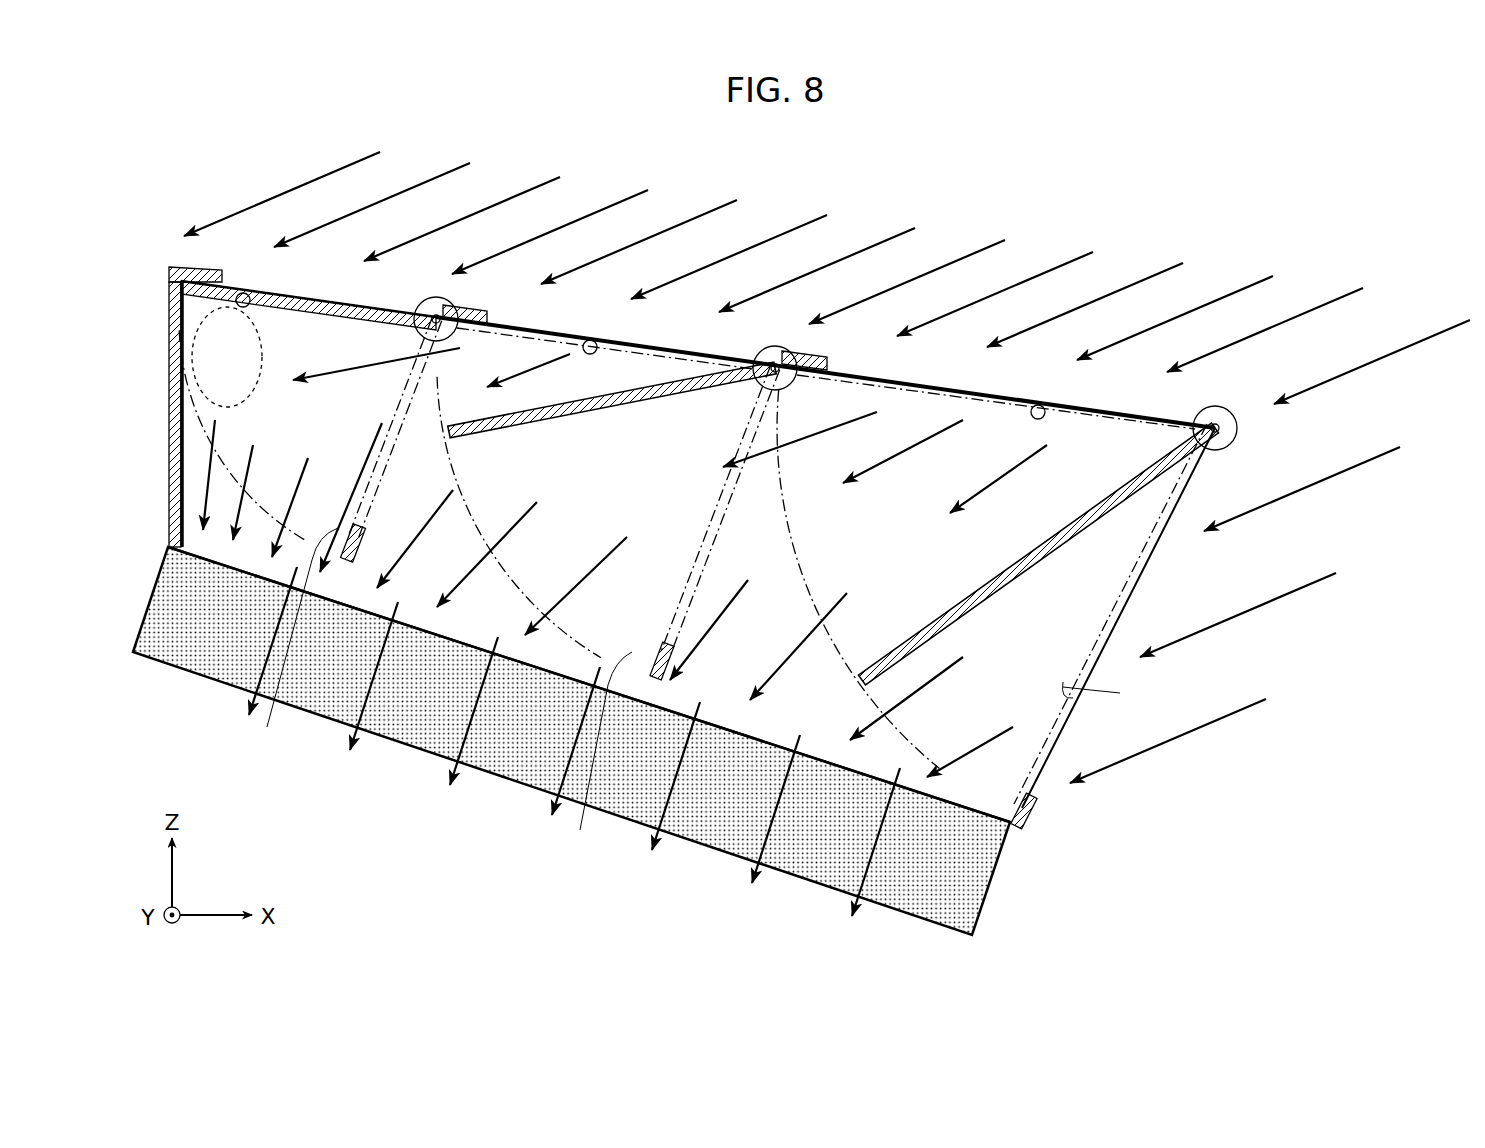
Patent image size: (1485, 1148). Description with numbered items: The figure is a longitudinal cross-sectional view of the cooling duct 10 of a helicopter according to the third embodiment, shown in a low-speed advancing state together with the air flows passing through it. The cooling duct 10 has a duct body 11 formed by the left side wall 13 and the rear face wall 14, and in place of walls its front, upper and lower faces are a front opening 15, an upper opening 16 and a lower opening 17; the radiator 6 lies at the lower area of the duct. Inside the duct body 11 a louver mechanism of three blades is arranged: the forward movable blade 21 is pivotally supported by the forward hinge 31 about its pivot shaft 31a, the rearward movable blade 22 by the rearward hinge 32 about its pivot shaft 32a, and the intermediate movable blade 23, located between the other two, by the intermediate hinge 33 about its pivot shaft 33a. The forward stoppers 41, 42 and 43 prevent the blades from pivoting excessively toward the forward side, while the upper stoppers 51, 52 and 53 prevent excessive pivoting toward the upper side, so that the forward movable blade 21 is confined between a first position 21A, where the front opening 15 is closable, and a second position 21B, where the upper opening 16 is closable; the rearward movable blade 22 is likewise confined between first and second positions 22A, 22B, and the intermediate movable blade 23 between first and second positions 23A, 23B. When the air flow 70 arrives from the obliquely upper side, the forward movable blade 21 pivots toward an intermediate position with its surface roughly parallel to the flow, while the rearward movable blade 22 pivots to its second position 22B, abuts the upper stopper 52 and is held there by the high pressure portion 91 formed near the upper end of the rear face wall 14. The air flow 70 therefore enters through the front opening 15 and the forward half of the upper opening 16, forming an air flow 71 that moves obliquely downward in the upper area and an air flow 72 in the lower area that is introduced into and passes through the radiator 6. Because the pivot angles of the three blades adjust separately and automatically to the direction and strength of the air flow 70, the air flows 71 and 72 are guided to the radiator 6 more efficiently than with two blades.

The radiator 6 is at (177, 670).
The cooling duct 10 is at (215, 176).
The duct body 11 is at (166, 296).
The left side wall 13 is at (1158, 550).
The rear face wall 14 is at (167, 400).
The front opening 15 is at (1098, 592).
The upper opening 16 is at (304, 326).
The lower opening 17 is at (760, 740).
The forward movable blade 21 is at (1158, 467).
The first position 21A is at (1115, 695).
The second position 21B is at (1038, 405).
The rearward movable blade 22 is at (381, 309).
The first position 22A is at (290, 645).
The second position 22B is at (243, 293).
The intermediate movable blade 23 is at (693, 378).
The first position 23A is at (594, 759).
The second position 23B is at (590, 340).
The forward hinge 31 is at (1228, 408).
The pivot shaft 31a is at (1237, 428).
The rearward hinge 32 is at (435, 297).
The pivot shaft 32a is at (448, 304).
The intermediate hinge 33 is at (777, 350).
The pivot shaft 33a is at (790, 346).
The forward stopper 41 is at (1027, 808).
The forward stopper 42 is at (365, 565).
The forward stopper 43 is at (668, 684).
The upper stopper 51 is at (815, 353).
The upper stopper 52 is at (175, 267).
The upper stopper 53 is at (488, 312).
The air flow 70 is at (1343, 470).
The air flow 71 is at (922, 440).
The air flow 72 is at (457, 603).
The high pressure portion 91 is at (193, 335).